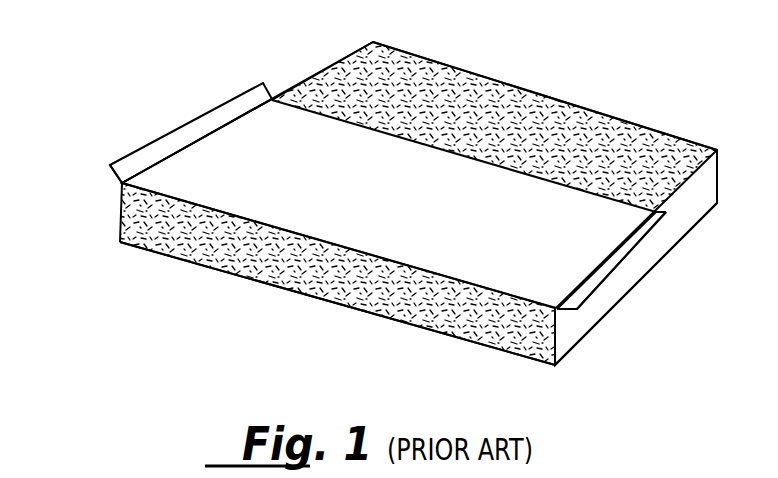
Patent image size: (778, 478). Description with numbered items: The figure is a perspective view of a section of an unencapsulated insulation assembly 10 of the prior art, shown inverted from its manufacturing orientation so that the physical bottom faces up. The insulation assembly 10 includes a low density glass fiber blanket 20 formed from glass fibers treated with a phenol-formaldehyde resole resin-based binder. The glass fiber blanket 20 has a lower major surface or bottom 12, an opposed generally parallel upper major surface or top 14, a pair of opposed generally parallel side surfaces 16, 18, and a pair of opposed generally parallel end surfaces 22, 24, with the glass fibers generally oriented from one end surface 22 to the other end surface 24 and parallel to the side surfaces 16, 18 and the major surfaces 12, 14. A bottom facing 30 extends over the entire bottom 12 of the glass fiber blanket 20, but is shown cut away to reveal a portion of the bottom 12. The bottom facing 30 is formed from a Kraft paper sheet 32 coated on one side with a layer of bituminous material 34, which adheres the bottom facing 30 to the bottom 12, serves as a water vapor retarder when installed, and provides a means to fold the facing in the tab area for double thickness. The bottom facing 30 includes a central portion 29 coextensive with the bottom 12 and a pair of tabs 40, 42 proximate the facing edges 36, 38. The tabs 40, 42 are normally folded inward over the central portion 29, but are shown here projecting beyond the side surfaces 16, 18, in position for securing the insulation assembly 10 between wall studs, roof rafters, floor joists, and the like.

The insulation assembly 10 is at (487, 188).
The lower major surface or bottom 12 is at (430, 113).
The upper major surface or top 14 is at (650, 273).
The side surface 16 is at (121, 210).
The side surface 18 is at (698, 202).
The glass fiber blanket 20 is at (343, 268).
The end surface 22 is at (603, 113).
The end surface 24 is at (458, 281).
The central portion 29 is at (318, 165).
The bottom facing 30 is at (432, 228).
The Kraft paper sheet 32 is at (260, 170).
The bituminous coating layer 34 is at (582, 308).
The facing edge 36 is at (648, 235).
The facing edge 38 is at (221, 103).
The tab 40 is at (597, 276).
The tab 42 is at (143, 150).